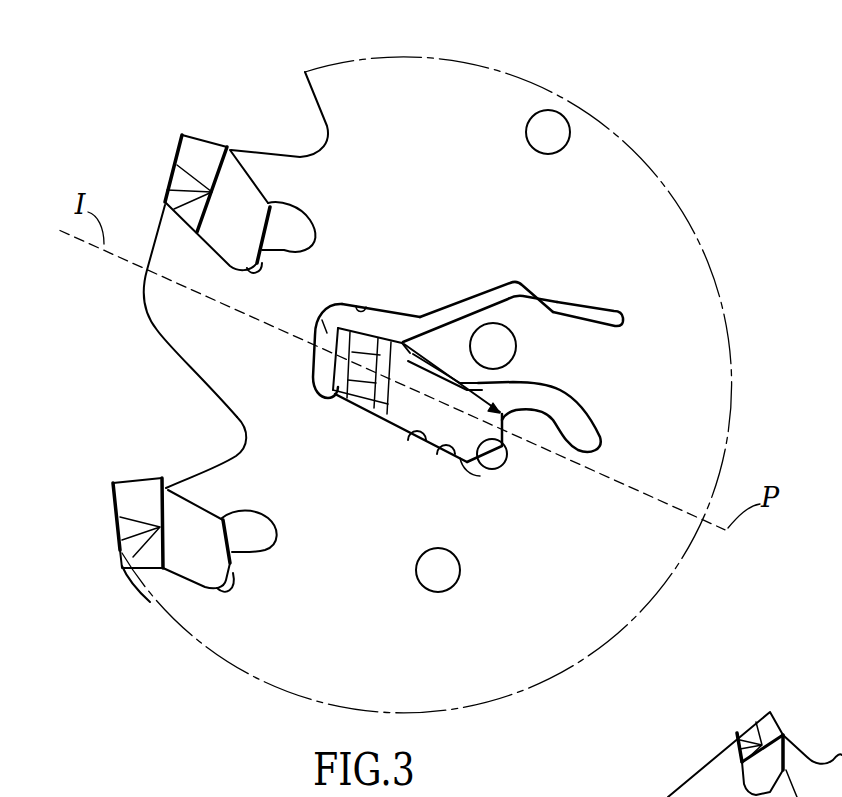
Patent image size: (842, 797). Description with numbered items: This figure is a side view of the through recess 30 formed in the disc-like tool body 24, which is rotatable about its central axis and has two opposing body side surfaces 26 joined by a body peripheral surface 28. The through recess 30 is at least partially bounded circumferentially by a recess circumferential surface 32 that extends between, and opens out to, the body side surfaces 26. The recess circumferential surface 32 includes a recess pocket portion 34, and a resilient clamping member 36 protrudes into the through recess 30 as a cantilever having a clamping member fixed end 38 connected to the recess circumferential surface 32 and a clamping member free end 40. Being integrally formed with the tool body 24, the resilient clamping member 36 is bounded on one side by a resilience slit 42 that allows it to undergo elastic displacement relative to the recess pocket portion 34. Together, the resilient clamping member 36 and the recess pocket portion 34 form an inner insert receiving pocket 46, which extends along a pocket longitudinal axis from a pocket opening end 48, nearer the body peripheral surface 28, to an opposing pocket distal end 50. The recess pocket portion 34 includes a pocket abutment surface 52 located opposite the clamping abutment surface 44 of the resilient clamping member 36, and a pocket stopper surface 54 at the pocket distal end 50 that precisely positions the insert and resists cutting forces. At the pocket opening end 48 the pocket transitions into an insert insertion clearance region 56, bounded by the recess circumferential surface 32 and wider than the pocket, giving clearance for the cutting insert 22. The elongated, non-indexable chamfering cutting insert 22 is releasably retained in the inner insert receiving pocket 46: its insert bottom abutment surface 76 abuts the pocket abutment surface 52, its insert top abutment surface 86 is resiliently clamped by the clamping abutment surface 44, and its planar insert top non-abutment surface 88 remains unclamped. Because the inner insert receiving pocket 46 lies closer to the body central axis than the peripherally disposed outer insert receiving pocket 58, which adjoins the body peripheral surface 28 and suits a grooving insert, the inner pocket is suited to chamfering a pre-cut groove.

The cutting insert 22 is at (558, 414).
The tool body 24 is at (642, 228).
The body side surfaces 26 is at (595, 180).
The body peripheral surface 28 is at (697, 765).
The through recess 30 is at (310, 388).
The recess circumferential surface 32 is at (350, 305).
The recess pocket portion 34 is at (441, 448).
The resilient clamping member 36 is at (459, 332).
The clamping member fixed end 38 is at (628, 362).
The clamping member free end 40 is at (437, 348).
The resilience slit 42 is at (500, 297).
The clamping abutment surface 44 is at (415, 347).
The inner insert receiving pocket 46 is at (513, 385).
The pocket opening end 48 is at (348, 408).
The pocket distal end 50 is at (499, 467).
The pocket abutment surface 52 is at (419, 440).
The pocket stopper surface 54 is at (468, 466).
The insert insertion clearance region 56 is at (327, 320).
The outer insert receiving pocket 58 is at (201, 551).
The insert bottom abutment surface 76 is at (387, 414).
The insert top abutment surface 86 is at (408, 350).
The insert top non-abutment surface 88 is at (460, 343).